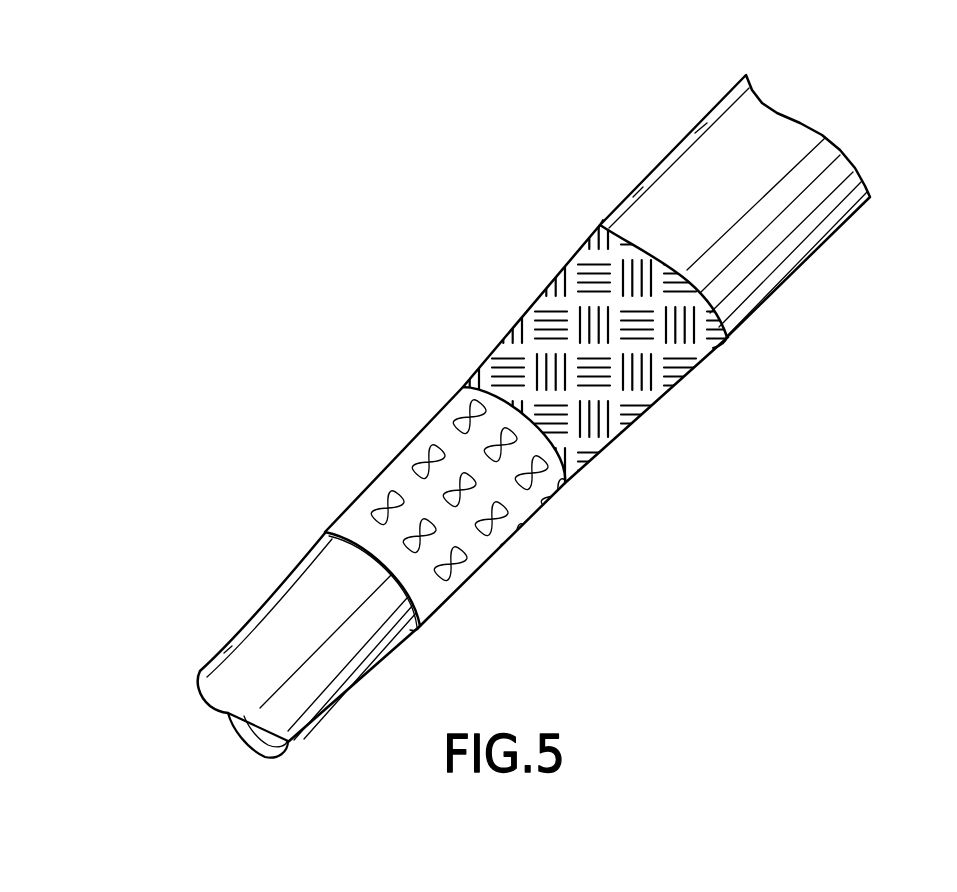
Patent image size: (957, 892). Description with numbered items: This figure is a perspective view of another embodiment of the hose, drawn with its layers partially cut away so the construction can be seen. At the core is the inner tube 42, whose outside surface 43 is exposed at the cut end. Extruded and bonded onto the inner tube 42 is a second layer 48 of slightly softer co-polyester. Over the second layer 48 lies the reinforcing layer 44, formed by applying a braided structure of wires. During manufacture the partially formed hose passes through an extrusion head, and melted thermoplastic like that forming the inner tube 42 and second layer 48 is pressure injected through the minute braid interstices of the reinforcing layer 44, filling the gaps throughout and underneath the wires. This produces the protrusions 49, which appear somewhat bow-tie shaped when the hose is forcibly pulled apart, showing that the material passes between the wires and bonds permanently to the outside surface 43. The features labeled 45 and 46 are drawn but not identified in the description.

The inner tube 42 is at (313, 562).
The outside surface 43 is at (310, 637).
The reinforcing layer 44 is at (643, 382).
The tube bore opening 45 is at (262, 732).
The outer tube 46 is at (797, 248).
The second layer 48 is at (458, 486).
The protrusions 49 is at (430, 452).